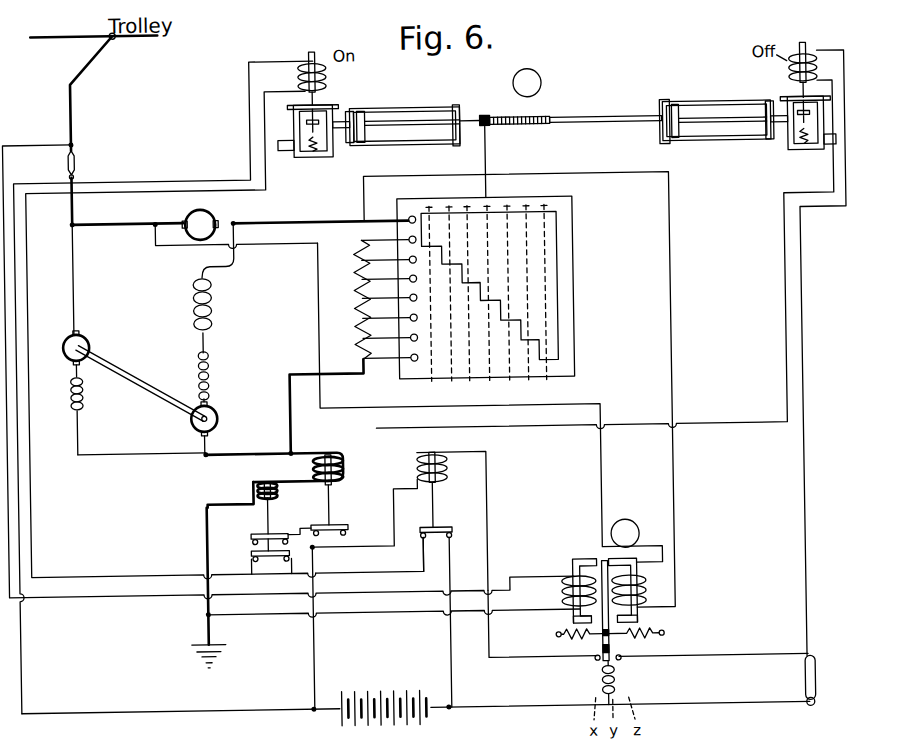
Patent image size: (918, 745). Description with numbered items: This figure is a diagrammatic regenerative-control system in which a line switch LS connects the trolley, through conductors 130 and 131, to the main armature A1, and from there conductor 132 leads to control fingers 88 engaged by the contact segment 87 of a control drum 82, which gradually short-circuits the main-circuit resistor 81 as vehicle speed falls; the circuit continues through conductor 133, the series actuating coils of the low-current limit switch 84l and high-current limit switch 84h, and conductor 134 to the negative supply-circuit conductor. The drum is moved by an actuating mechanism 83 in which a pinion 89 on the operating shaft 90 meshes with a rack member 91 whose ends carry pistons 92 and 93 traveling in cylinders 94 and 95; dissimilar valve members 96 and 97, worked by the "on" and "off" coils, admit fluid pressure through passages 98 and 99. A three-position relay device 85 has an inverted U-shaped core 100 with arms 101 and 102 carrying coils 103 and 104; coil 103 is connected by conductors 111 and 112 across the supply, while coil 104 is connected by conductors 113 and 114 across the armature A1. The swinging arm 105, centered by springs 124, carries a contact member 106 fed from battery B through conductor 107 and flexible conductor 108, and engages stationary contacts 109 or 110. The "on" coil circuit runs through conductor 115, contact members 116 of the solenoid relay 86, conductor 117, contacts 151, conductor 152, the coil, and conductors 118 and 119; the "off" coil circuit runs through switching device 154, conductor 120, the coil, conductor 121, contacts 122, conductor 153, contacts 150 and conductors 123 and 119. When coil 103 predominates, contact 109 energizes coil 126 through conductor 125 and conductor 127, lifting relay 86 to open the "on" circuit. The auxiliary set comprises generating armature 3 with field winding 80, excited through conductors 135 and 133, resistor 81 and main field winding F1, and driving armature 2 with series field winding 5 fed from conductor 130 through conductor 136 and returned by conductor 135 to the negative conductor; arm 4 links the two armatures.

The auxiliary driving armature 2 is at (89, 346).
The auxiliary armature 3 is at (218, 417).
The connecting bar 4 is at (150, 387).
The series field winding 5 is at (87, 406).
The field winding 80 is at (210, 381).
The main-circuit resistor 81 is at (356, 298).
The control drum 82 is at (578, 283).
The actuating mechanism 83 is at (527, 83).
The high-current limit switch 84h is at (247, 493).
The low-current limit switch 84l is at (314, 494).
The three-position relay device 85 is at (625, 533).
The solenoid-type relay device 86 is at (440, 468).
The movable contact member 87 is at (518, 283).
The control fingers 88 is at (419, 315).
The pinion 89 is at (496, 126).
The operating shaft 90 is at (489, 159).
The rack member 91 is at (552, 127).
The piston 92 is at (372, 107).
The piston 93 is at (690, 106).
The operating cylinder 94 is at (442, 107).
The operating cylinder 95 is at (748, 106).
The valve member 96 is at (300, 120).
The valve member 97 is at (800, 157).
The pipe or passage 98 is at (289, 154).
The pipe or passage 99 is at (836, 153).
The magnetizable core member 100 is at (580, 561).
The arm 101 is at (577, 619).
The arm 102 is at (636, 620).
The energizing coil 103 is at (561, 591).
The energizing coil 104 is at (650, 589).
The swinging arm 105 is at (599, 648).
The contact member 106 is at (614, 672).
The conductor 107 is at (620, 717).
The flexible conductor 108 is at (598, 689).
The stationary contact member 109 is at (591, 662).
The stationary contact member 110 is at (618, 661).
The conductor 111 is at (288, 360).
The conductor 112 is at (386, 590).
The conductor 113 is at (320, 268).
The conductor 114 is at (367, 200).
The conductor 115 is at (447, 676).
The contact members 116 is at (436, 540).
The conductor 117 is at (369, 567).
The conductor 118 is at (24, 673).
The conductor 119 is at (330, 710).
The conductor 120 is at (803, 243).
The conductor 121 is at (781, 417).
The contact members 122 is at (341, 534).
The conductor 123 is at (312, 547).
The centering springs 124 is at (553, 640).
The conductor 125 is at (542, 636).
The actuating coil 126 is at (413, 456).
The conductor 127 is at (404, 554).
The conductor 130 is at (72, 210).
The conductor 131 is at (127, 215).
The conductor 132 is at (236, 235).
The conductor 133 is at (290, 410).
The conductor 134 is at (204, 503).
The conductor 135 is at (186, 467).
The conductor 136 is at (82, 281).
The contact members 150 is at (248, 549).
The contact members 151 is at (271, 567).
The conductor 152 is at (166, 570).
The conductor 153 is at (272, 530).
The switching device 154 is at (813, 685).
The main armature A1 is at (214, 214).
The main field winding F1 is at (195, 306).
The line switch LS is at (79, 158).
The battery B is at (368, 700).